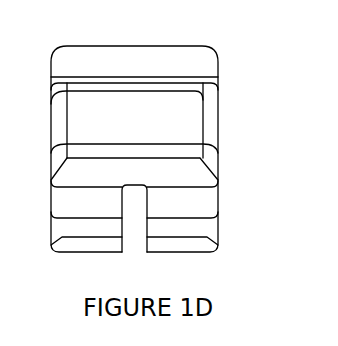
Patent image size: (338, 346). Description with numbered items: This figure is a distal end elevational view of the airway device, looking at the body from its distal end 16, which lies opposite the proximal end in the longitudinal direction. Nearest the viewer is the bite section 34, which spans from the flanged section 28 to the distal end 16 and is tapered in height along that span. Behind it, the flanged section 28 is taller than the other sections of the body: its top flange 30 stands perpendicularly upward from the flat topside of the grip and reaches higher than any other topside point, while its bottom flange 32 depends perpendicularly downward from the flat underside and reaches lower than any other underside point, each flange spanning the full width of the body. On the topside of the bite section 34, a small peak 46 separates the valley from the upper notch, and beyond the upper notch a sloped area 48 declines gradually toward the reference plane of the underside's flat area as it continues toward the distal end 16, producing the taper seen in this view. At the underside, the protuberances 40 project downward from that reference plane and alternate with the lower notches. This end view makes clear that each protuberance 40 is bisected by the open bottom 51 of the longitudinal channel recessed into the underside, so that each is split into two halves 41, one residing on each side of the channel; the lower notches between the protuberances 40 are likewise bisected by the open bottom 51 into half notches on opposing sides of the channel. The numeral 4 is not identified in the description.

The device 4 is at (146, 147).
The distal end 16 is at (199, 147).
The flanged section 28 is at (197, 60).
The top flange 30 is at (166, 46).
The bottom flange 32 is at (213, 237).
The bite section 34 is at (187, 116).
The protuberances 40 is at (209, 201).
The halves 41 is at (213, 191).
The small peak 46 is at (86, 77).
The sloped area 48 is at (74, 118).
The open bottom 51 is at (131, 248).